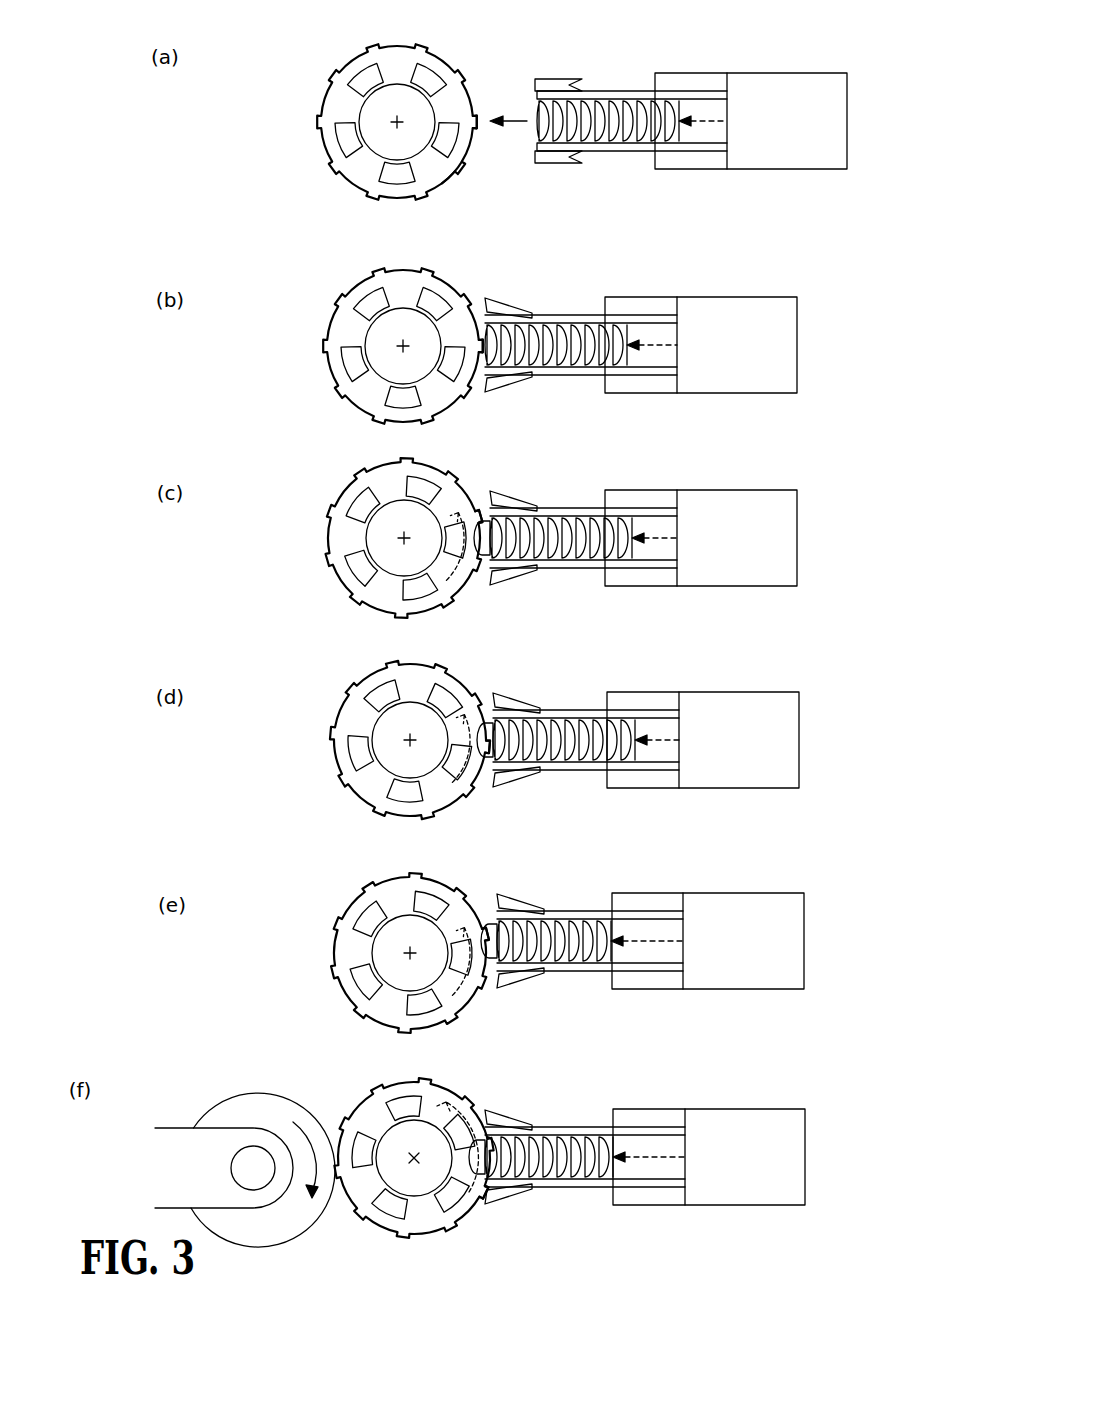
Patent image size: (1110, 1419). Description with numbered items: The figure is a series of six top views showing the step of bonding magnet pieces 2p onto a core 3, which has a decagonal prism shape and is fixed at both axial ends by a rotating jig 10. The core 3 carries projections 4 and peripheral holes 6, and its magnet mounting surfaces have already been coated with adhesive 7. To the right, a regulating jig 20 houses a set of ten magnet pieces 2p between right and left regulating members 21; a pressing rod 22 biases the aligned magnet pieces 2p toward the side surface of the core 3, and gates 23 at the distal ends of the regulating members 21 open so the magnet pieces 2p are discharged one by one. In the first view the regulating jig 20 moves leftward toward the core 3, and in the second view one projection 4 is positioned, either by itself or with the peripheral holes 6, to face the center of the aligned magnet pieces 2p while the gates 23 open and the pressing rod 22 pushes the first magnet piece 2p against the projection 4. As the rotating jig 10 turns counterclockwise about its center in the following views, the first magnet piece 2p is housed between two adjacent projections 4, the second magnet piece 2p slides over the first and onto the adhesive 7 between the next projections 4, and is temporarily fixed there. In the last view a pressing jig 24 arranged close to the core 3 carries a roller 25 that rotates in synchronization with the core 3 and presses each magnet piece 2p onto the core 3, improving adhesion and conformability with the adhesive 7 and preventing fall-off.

The core 3 is at (388, 109).
The projection 4 is at (494, 85).
The peripheral hole 6 is at (368, 123).
The adhesive 7 is at (469, 179).
The rotating jig 10 is at (339, 119).
The magnet piece 2p is at (608, 154).
The regulating jig 20 is at (751, 89).
The regulating member 21 is at (632, 112).
The pressing rod 22 is at (711, 64).
The gate 23 is at (569, 117).
The pressing jig 24 is at (212, 1128).
The roller 25 is at (227, 1100).